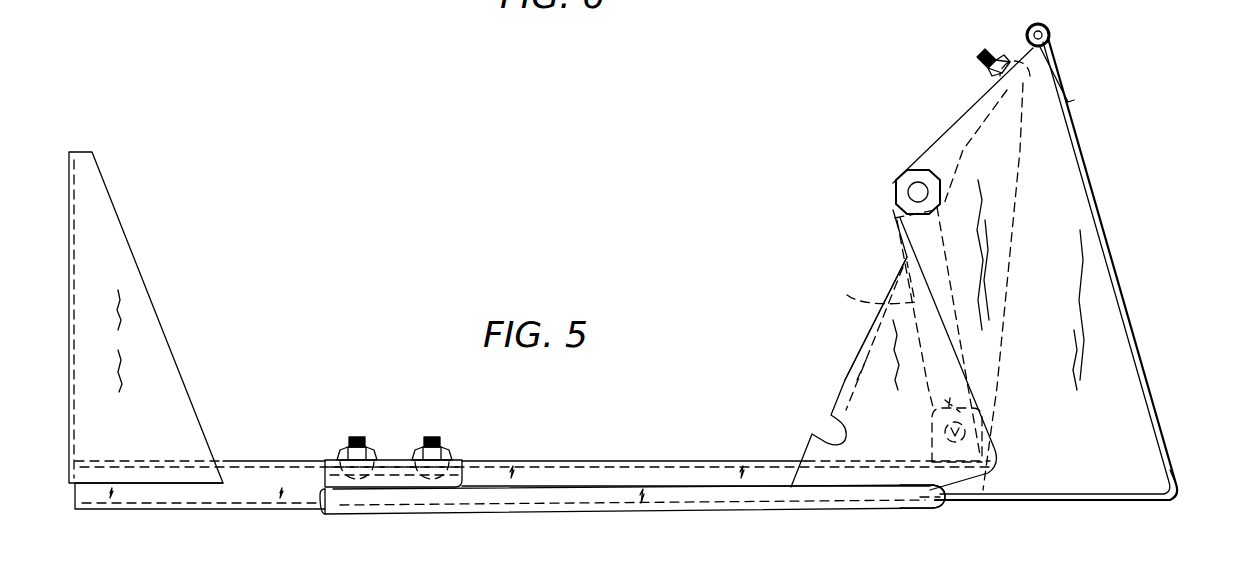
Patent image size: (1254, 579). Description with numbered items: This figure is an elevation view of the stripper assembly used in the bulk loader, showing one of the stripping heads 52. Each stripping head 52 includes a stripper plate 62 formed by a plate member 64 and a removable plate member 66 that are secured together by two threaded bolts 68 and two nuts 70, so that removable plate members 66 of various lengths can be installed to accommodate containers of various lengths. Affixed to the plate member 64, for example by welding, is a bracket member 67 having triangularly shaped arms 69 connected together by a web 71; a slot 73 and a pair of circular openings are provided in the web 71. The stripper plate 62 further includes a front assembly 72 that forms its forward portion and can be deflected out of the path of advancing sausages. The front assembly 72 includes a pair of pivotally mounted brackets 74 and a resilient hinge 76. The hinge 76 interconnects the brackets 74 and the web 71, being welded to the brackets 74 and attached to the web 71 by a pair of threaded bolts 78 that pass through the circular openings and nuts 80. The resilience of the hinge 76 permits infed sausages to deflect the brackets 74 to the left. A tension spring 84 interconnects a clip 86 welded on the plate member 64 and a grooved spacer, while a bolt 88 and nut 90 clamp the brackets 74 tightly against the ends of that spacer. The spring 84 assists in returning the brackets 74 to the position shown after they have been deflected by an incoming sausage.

The stripping head 52 is at (715, 403).
The stripper plate 62 is at (612, 516).
The plate member 64 is at (900, 508).
The removable plate member 66 is at (160, 511).
The bracket member 67 is at (838, 360).
The threaded bolts 68 is at (365, 442).
The triangularly shaped arms 69 is at (907, 418).
The nuts 70 is at (340, 455).
The web 71 is at (862, 340).
The front assembly 72 is at (1150, 305).
The slot 73 is at (897, 286).
The pivotally mounted brackets 74 is at (1178, 470).
The resilient hinge 76 is at (1063, 78).
The threaded bolts 78 is at (990, 50).
The nuts 80 is at (1040, 24).
The tension spring 84 is at (867, 283).
The clip 86 is at (985, 455).
The bolt 88 is at (908, 192).
The nut 90 is at (900, 185).